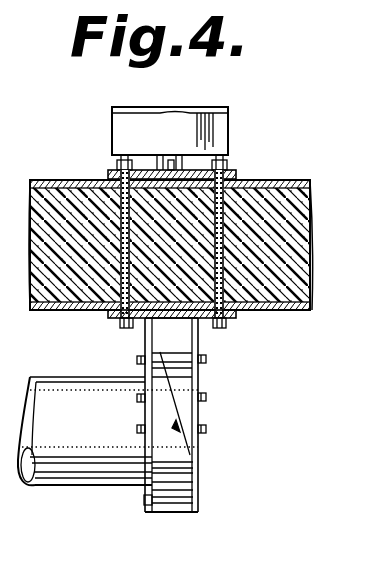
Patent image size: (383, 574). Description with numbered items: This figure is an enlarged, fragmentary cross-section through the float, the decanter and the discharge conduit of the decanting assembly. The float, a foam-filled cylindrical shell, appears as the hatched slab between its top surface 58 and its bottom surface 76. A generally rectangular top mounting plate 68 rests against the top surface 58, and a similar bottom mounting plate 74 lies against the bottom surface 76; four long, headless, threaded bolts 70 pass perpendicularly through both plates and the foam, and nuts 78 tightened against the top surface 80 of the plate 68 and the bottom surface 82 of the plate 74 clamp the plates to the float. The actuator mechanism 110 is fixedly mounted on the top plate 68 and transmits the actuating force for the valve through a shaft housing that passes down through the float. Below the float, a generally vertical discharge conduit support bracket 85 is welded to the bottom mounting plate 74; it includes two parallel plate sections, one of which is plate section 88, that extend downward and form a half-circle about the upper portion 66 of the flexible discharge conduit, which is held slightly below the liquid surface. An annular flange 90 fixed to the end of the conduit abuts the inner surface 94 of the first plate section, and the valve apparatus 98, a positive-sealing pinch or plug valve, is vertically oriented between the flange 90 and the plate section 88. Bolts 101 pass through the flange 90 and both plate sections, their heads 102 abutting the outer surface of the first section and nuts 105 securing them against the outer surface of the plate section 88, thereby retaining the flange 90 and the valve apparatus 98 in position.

The top surface 58 is at (47, 180).
The upper portion 66 is at (84, 485).
The top mounting plate 68 is at (236, 176).
The threaded bolts 70 is at (114, 248).
The bottom mounting plate 74 is at (107, 314).
The bottom surface 76 is at (67, 313).
The nuts 78 is at (125, 328).
The top surface 80 is at (167, 148).
The bottom surface 82 is at (207, 320).
The discharge conduit support bracket 85 is at (84, 344).
The plate section 88 is at (206, 384).
The annular flange 90 is at (157, 512).
The inner surface 94 is at (152, 328).
The valve apparatus 98 is at (200, 497).
The bolts 101 is at (207, 397).
The heads 102 is at (140, 366).
The nuts 105 is at (207, 431).
The actuator mechanism 110 is at (229, 128).